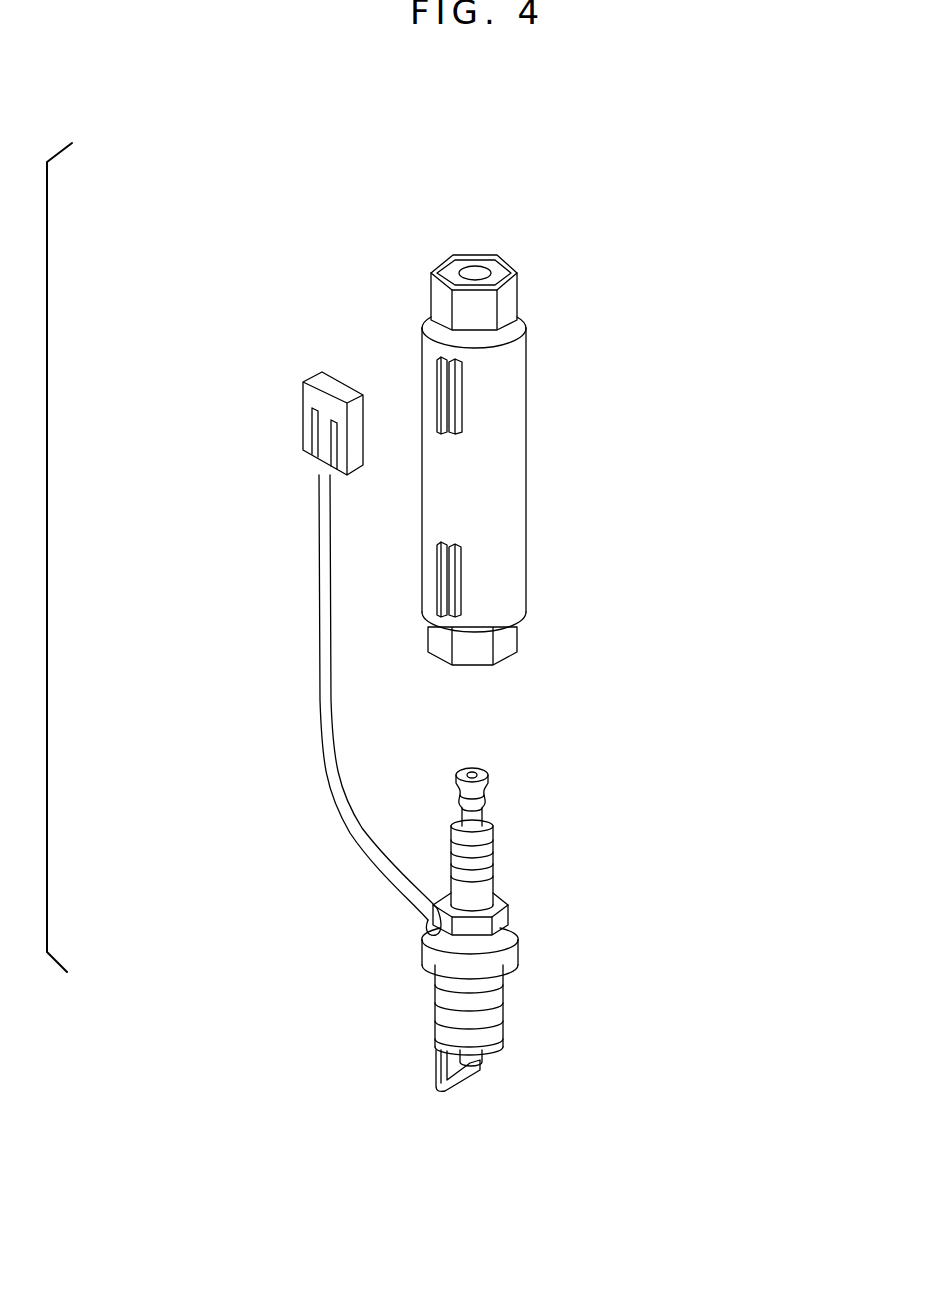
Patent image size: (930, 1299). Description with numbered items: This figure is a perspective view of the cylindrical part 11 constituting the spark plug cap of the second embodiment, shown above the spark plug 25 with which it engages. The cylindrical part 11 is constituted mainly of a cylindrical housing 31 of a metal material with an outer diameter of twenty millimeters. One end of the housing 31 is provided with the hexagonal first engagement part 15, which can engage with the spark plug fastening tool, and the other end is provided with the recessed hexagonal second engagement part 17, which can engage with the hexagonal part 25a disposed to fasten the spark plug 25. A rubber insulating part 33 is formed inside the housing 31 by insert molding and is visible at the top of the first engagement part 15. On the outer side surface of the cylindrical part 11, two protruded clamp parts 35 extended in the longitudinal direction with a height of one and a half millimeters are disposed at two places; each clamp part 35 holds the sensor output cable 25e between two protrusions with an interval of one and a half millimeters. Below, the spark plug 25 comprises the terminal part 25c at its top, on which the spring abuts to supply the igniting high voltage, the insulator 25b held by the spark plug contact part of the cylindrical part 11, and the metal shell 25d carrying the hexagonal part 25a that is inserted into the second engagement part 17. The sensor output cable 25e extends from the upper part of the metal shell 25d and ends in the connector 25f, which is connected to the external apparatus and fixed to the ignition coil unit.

The cylindrical part 11 is at (634, 278).
The first engagement part 15 is at (430, 293).
The insulating part 33 is at (450, 258).
The housing 31 is at (527, 380).
The protruded clamp part 35 is at (450, 432).
The second engagement part 17 is at (518, 640).
The spark plug 25 is at (393, 1042).
The hexagonal part 25a is at (500, 892).
The insulator 25b is at (494, 878).
The terminal part 25c is at (488, 782).
The metal shell 25d is at (422, 945).
The sensor output cable 25e is at (325, 802).
The connector 25f is at (303, 422).